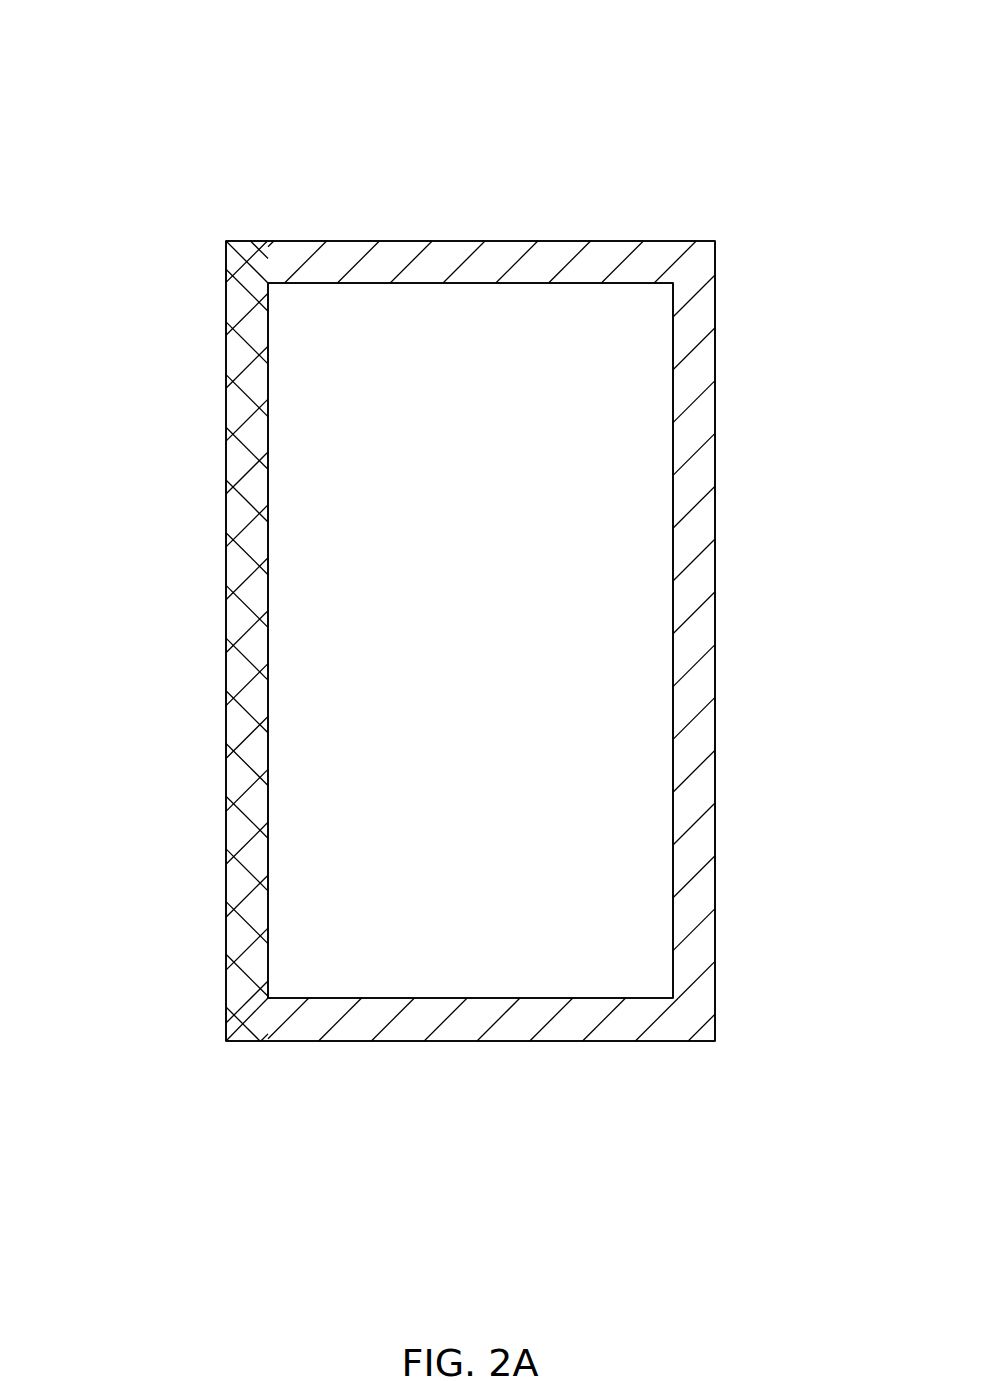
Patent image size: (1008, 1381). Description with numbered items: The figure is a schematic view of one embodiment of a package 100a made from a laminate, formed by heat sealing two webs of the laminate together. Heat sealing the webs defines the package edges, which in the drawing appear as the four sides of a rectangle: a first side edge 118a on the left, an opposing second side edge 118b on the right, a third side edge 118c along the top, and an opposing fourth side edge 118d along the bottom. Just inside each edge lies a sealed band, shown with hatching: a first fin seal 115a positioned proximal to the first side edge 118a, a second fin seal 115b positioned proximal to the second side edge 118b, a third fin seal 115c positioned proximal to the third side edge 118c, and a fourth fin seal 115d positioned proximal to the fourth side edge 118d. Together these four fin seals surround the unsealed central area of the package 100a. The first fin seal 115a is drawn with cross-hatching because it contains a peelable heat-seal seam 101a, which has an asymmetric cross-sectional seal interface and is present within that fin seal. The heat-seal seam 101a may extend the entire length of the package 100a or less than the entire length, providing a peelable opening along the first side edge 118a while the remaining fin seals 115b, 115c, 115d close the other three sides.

The package 100a is at (457, 25).
The peelable heat-seal seam 101a is at (245, 512).
The first fin seal 115a is at (240, 674).
The second fin seal 115b is at (697, 526).
The third fin seal 115c is at (597, 257).
The fourth fin seal 115d is at (360, 1030).
The first side edge 118a is at (226, 894).
The second side edge 118b is at (717, 678).
The third side edge 118c is at (398, 240).
The fourth side edge 118d is at (565, 1043).